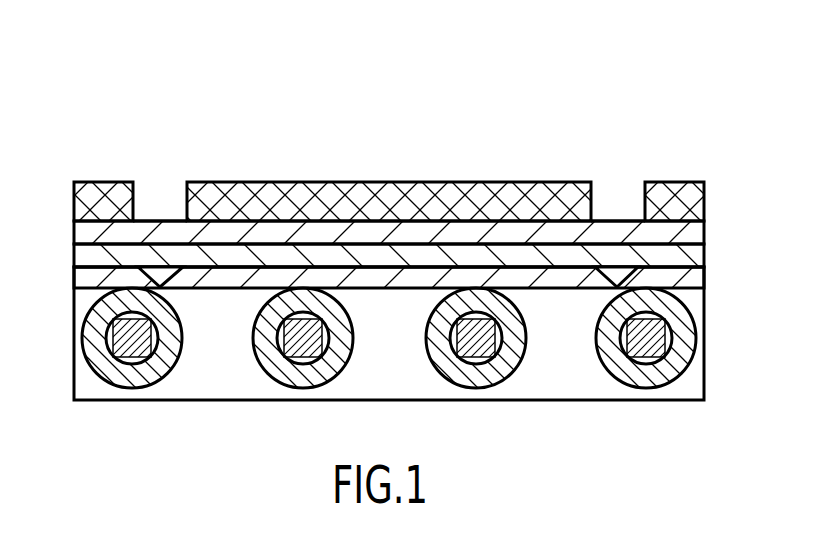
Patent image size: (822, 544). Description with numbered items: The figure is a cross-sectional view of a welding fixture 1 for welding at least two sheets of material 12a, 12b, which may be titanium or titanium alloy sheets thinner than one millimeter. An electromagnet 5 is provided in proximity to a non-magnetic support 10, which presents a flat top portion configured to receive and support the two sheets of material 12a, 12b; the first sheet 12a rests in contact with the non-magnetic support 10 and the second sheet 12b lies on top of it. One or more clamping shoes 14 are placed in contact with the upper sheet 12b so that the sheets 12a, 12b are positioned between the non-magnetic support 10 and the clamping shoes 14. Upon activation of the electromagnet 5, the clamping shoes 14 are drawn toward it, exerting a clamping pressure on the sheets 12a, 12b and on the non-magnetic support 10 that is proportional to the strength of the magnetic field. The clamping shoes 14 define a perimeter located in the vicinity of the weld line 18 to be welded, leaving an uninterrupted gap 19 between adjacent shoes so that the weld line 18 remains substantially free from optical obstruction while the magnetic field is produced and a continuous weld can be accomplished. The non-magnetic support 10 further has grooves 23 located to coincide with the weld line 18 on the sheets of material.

The welding fixture 1 is at (72, 100).
The electromagnet 5 is at (261, 380).
The non-magnetic support 10 is at (706, 281).
The sheet of material 12a is at (706, 252).
The sheet of material 12b is at (706, 224).
The clamping shoe 14 is at (107, 202).
The weld line 18 is at (161, 221).
The uninterrupted gap 19 is at (171, 187).
The groove 23 is at (185, 272).